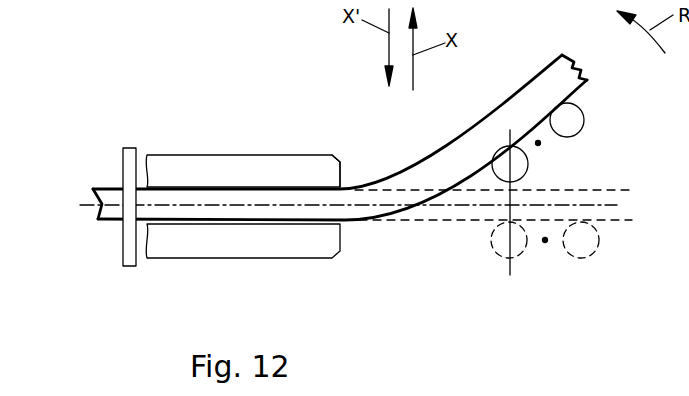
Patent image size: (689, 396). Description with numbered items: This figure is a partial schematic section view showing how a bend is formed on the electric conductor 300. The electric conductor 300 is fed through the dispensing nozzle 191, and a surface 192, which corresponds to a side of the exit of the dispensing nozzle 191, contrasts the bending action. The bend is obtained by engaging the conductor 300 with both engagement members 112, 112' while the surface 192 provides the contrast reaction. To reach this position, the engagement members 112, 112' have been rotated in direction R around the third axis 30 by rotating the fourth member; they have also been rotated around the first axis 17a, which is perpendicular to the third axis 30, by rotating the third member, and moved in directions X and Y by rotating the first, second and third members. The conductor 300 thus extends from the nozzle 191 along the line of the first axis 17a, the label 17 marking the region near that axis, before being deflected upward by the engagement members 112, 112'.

The tube 17 is at (682, 176).
The first axis 17a is at (448, 206).
The third axis 30 is at (538, 143).
The engagement member 112 is at (605, 198).
The engagement member 112' is at (532, 232).
The dispensing nozzle 191 is at (192, 167).
The surface 192 is at (337, 187).
The electric conductor 300 is at (116, 197).